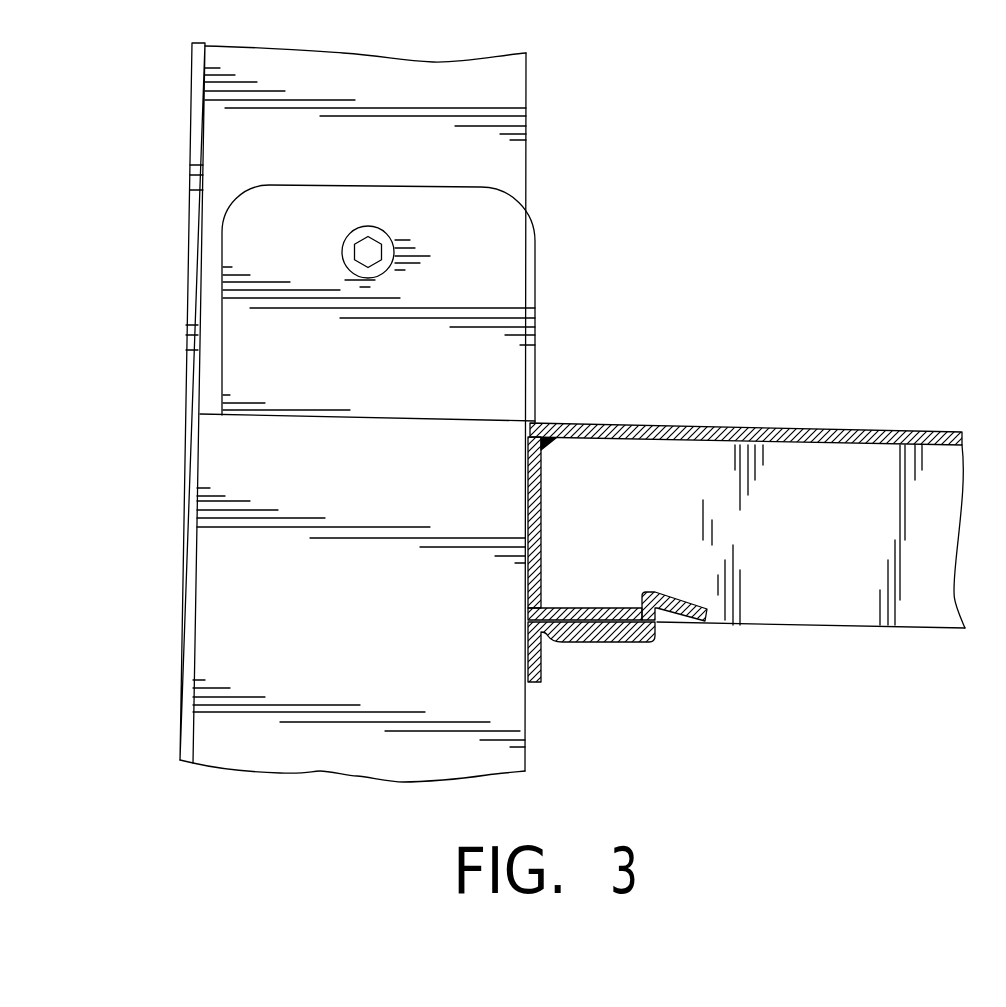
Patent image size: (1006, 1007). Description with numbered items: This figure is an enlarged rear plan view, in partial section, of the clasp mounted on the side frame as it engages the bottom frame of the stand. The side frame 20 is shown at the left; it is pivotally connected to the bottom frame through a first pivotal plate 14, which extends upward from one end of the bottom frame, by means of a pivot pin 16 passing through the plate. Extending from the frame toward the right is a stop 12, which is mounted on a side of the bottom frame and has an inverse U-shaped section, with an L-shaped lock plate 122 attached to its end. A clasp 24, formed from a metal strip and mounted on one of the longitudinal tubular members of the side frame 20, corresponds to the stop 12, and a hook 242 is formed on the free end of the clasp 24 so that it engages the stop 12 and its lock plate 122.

The stop 12 is at (880, 432).
The first pivotal plate 14 is at (522, 300).
The pivot pin 16 is at (372, 253).
The side frame 20 is at (187, 132).
The clasp 24 is at (595, 630).
The L-shaped lock plate 122 is at (535, 511).
The hook 242 is at (672, 602).